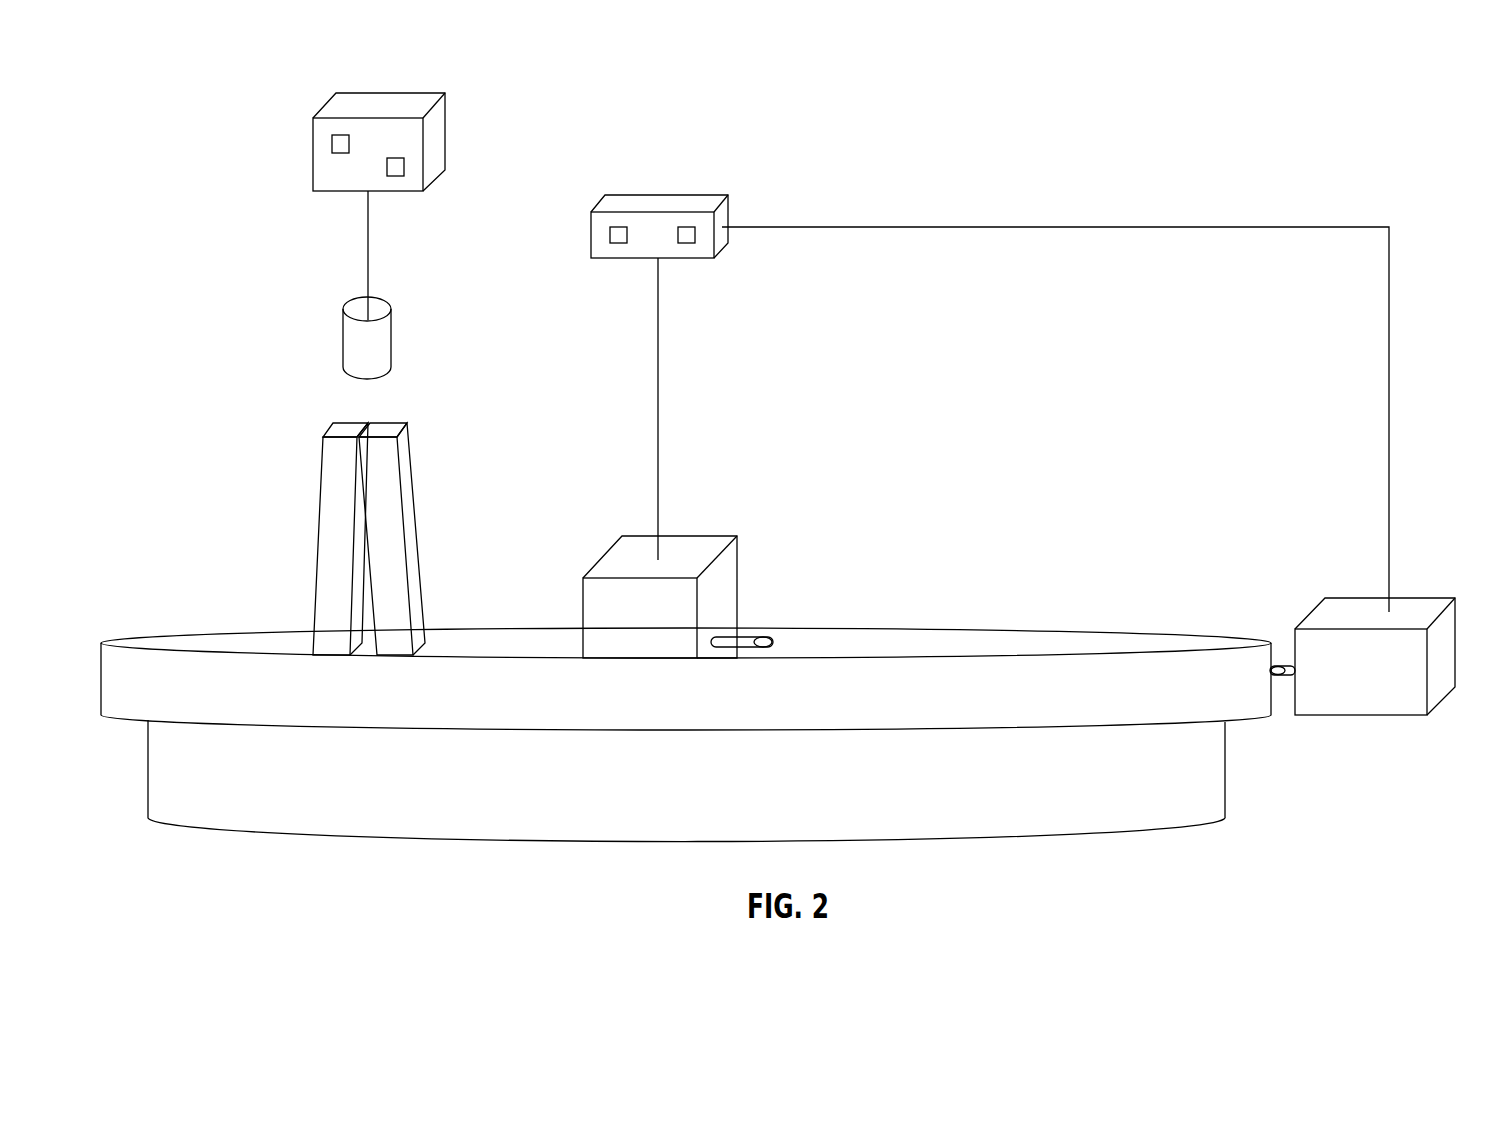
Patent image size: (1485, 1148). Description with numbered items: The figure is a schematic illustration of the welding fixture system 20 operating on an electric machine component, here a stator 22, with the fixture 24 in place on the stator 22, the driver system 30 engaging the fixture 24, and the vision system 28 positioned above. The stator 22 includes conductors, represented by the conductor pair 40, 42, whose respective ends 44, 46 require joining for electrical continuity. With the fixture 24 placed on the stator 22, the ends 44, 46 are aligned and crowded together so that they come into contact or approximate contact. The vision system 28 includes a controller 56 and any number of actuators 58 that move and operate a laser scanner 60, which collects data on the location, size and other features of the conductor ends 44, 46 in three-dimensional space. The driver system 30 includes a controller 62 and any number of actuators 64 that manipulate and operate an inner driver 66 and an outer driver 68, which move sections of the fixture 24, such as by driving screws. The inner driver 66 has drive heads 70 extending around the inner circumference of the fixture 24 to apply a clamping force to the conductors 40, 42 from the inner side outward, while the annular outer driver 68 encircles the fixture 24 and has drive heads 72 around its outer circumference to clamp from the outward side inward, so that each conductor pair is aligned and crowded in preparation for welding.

The welding fixture system 20 is at (1168, 121).
The stator 22 is at (1227, 770).
The fixture 24 is at (1050, 625).
The vision system 28 is at (391, 165).
The driver system 30 is at (682, 236).
The conductor 40 is at (316, 529).
The conductor 42 is at (416, 508).
The end 44 is at (338, 432).
The end 46 is at (393, 430).
The controller 56 is at (332, 142).
The actuators 58 is at (395, 176).
The laser scanner 60 is at (344, 340).
The controller 62 is at (619, 243).
The actuators 64 is at (685, 243).
The inner driver 66 is at (720, 580).
The outer driver 68 is at (1405, 607).
The drive heads 70 is at (745, 637).
The drive heads 72 is at (1286, 662).